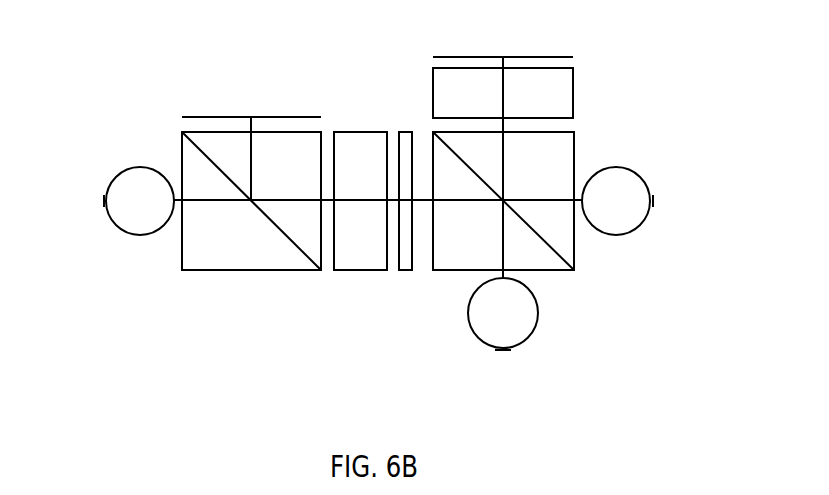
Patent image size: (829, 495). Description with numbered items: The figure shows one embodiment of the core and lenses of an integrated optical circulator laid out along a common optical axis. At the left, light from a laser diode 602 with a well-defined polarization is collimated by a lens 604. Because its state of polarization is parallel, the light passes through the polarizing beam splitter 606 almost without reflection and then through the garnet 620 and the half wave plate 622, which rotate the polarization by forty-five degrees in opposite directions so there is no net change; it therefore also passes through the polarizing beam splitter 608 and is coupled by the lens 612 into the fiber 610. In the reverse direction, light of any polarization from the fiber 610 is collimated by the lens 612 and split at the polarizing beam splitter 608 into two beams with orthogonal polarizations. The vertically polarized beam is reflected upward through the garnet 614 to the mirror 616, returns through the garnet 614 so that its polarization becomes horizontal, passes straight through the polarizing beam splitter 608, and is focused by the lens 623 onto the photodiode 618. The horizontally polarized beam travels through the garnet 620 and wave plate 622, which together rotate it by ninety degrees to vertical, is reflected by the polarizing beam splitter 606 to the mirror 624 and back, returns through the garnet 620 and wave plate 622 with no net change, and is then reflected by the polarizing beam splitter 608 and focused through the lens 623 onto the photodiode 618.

The laser diode 602 is at (93, 195).
The lens 604 is at (138, 248).
The polarizing beam splitter 606 is at (238, 283).
The polarizing beam splitter 608 is at (450, 283).
The fiber 610 is at (667, 197).
The lens 612 is at (617, 248).
The garnet 614 is at (586, 86).
The mirror 616 is at (469, 40).
The photodiode 618 is at (506, 365).
The garnet 620 is at (361, 283).
The half wave plate 622 is at (404, 283).
The lens 623 is at (555, 320).
The mirror 624 is at (276, 103).